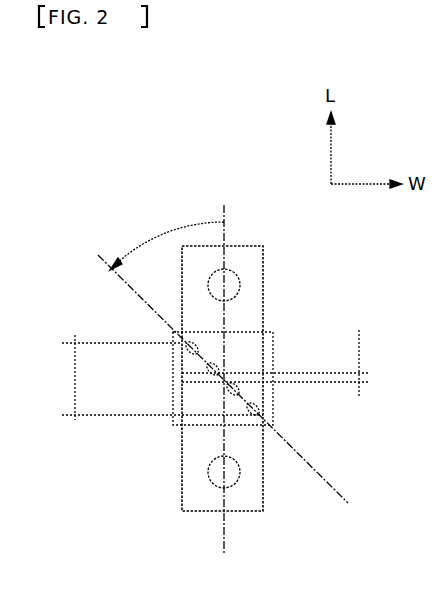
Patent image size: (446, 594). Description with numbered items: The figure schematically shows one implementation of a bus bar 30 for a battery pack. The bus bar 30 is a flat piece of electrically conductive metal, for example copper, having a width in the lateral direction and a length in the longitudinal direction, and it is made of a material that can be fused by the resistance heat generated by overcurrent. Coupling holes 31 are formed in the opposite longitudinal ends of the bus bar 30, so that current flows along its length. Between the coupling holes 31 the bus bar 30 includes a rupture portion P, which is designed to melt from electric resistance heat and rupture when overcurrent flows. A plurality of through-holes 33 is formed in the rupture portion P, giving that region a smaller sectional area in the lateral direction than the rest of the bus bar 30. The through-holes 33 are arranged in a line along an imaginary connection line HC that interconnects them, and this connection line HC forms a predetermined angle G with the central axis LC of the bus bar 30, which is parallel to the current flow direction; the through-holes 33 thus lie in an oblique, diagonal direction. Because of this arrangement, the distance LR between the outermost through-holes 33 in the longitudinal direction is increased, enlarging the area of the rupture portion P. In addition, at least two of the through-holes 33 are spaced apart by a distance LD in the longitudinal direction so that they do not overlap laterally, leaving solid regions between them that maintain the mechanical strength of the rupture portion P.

The bus bar 30 is at (80, 154).
The coupling holes 31 is at (236, 281).
The through-holes 33 is at (261, 411).
The imaginary connection line HC is at (328, 483).
The central axis LC is at (225, 538).
The predetermined angle G is at (167, 238).
The rupture portion P is at (273, 333).
The distance between outermost through-holes LR is at (153, 377).
The distance between through-holes LD is at (286, 363).